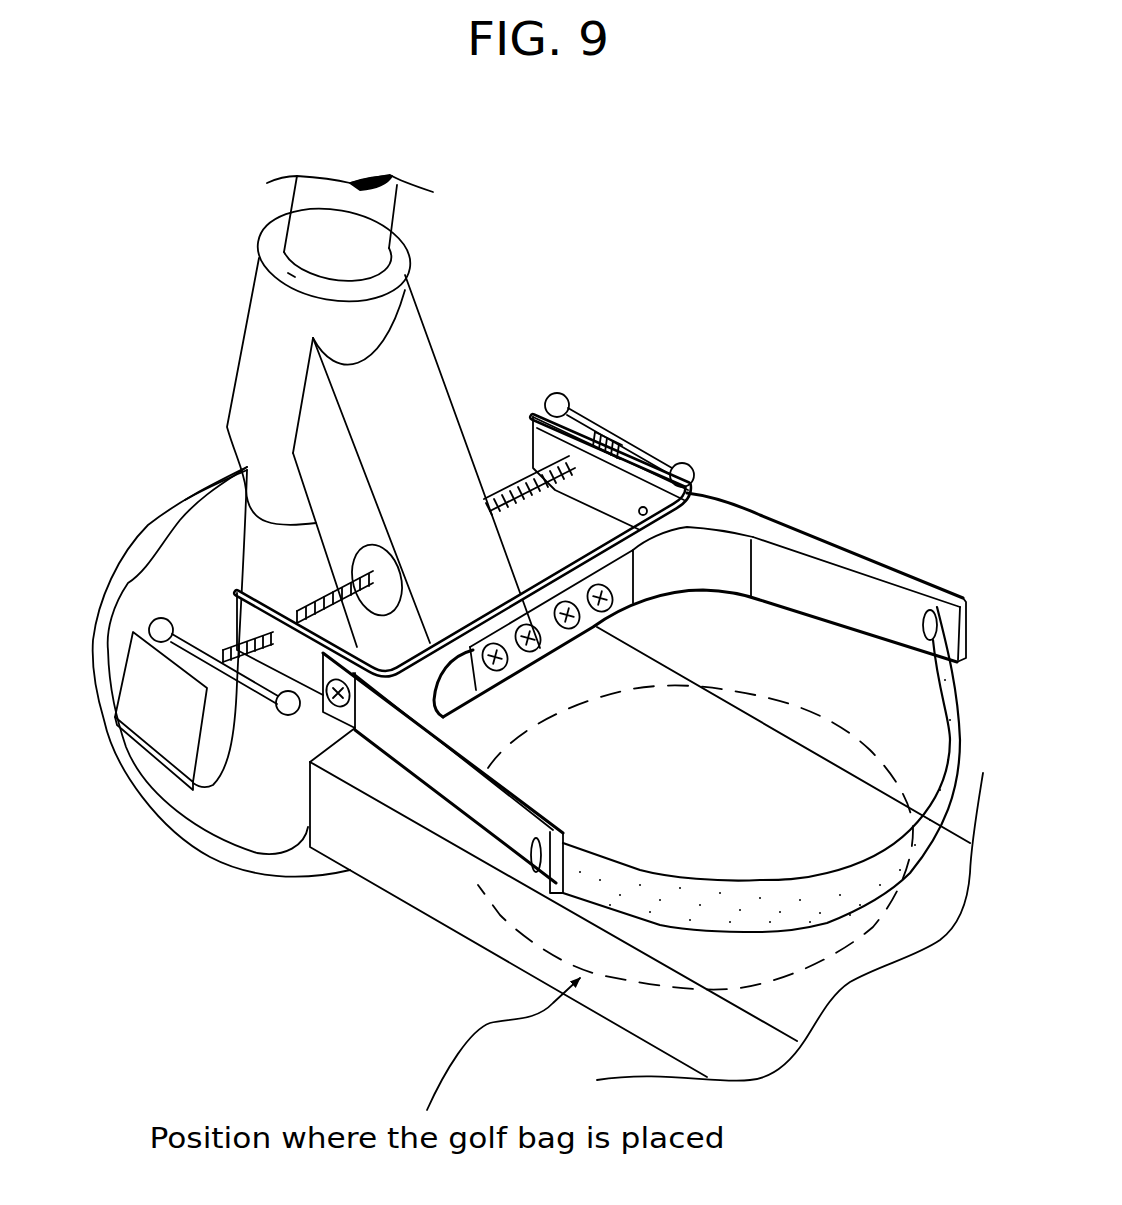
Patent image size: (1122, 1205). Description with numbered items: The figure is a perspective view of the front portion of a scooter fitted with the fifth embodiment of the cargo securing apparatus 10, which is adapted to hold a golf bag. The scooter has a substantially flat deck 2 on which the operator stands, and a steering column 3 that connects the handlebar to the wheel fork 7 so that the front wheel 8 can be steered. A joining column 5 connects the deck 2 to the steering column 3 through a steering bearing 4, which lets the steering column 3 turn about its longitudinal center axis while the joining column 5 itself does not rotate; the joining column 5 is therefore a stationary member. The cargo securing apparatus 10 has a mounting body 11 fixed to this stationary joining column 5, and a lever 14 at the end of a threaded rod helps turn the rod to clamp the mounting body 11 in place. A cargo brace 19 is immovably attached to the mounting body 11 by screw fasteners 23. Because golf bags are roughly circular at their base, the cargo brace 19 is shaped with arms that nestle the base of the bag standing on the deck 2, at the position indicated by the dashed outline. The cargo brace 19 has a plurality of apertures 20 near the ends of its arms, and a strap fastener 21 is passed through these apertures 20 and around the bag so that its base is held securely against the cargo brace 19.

The deck 2 is at (397, 822).
The steering column 3 is at (392, 201).
The steering bearing 4 is at (251, 349).
The joining column 5 is at (418, 426).
The wheel fork 7 is at (158, 735).
The front wheel 8 is at (233, 822).
The cargo securing apparatus 10 is at (771, 437).
The mounting body 11 is at (566, 432).
The lever 14 is at (168, 616).
The cargo brace 19 is at (804, 540).
The apertures 20 is at (535, 862).
The strap fastener 21 is at (789, 939).
The screw fasteners 23 is at (547, 643).